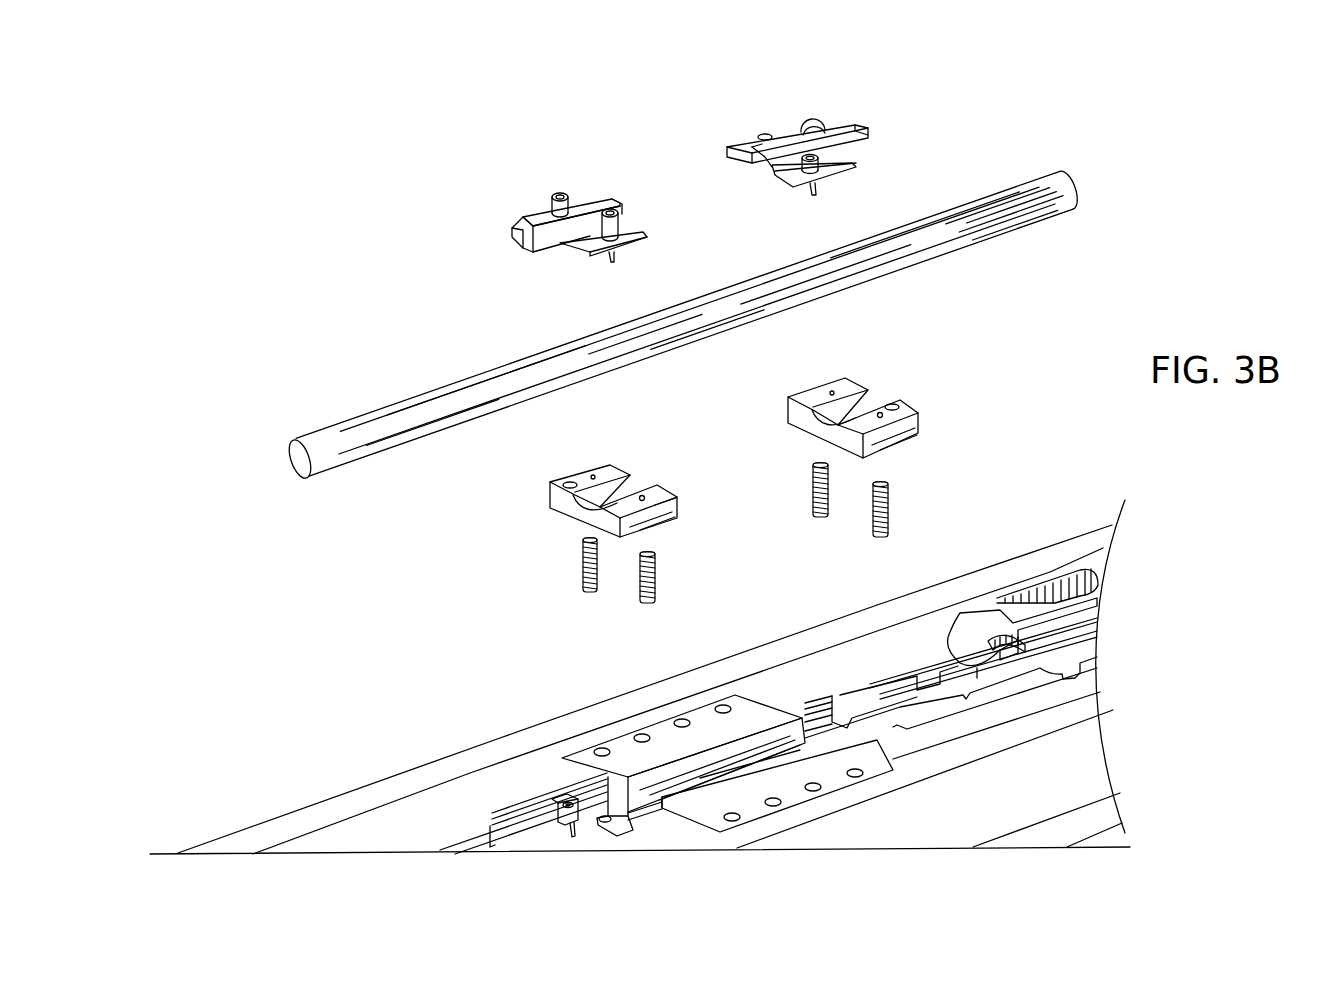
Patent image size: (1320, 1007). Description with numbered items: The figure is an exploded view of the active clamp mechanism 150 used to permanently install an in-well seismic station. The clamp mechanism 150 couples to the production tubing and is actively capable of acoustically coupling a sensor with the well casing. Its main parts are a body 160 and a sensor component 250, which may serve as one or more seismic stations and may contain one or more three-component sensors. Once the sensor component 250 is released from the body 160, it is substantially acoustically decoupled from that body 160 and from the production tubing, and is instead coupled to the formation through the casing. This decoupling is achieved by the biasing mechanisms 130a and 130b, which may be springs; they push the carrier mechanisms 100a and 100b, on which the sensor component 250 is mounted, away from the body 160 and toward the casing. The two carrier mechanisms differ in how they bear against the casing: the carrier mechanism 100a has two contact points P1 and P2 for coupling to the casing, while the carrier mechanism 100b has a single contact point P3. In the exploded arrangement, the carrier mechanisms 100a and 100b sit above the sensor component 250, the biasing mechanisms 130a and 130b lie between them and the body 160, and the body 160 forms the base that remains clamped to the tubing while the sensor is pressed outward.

The clamp mechanism 150 is at (378, 150).
The sensor component 250 is at (1048, 152).
The carrier mechanism 100a is at (548, 262).
The carrier mechanism 100b is at (748, 118).
The contact point P1 is at (559, 193).
The contact point P2 is at (618, 207).
The contact point P3 is at (808, 120).
The biasing mechanism 130a is at (574, 575).
The biasing mechanism 130b is at (808, 490).
The body 160 is at (391, 762).